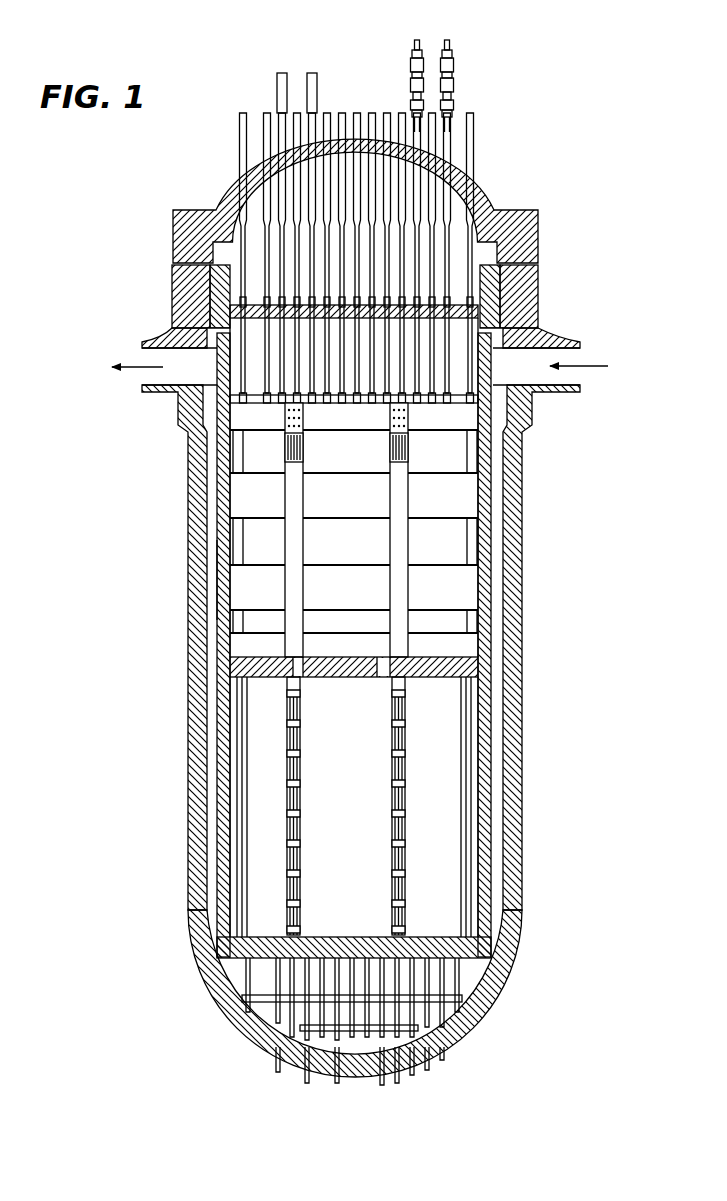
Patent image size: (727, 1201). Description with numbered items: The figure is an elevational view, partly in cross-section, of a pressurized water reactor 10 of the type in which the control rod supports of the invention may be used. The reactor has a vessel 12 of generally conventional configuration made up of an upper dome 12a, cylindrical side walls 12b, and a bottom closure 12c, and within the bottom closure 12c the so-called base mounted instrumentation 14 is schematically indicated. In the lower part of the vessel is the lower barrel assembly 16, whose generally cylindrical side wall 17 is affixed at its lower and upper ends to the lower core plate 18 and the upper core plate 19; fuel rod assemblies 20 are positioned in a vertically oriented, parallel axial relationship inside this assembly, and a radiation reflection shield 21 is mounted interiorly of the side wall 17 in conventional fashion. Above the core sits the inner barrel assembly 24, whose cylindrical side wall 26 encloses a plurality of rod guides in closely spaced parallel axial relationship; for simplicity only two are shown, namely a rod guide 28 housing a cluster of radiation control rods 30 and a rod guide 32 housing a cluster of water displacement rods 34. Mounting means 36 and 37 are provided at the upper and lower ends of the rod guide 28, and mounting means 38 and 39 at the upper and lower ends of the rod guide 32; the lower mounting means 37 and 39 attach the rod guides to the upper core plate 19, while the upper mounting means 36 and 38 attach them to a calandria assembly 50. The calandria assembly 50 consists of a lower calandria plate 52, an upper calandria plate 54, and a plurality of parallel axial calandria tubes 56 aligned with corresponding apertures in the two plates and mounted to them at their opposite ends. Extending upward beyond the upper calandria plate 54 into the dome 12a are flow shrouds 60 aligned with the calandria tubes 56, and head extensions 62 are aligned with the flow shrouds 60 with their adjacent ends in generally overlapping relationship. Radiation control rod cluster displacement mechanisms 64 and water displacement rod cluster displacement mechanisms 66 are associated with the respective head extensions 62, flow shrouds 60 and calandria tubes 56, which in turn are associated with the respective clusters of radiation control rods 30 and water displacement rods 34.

The pressurized water reactor 10 is at (599, 209).
The vessel 12 is at (362, 608).
The upper dome 12a is at (488, 197).
The cylindrical side walls 12b is at (522, 466).
The bottom closure 12c is at (490, 1002).
The base mounted instrumentation 14 is at (437, 1060).
The lower barrel assembly 16 is at (203, 731).
The cylindrical side wall 17 is at (218, 768).
The lower core plate 18 is at (218, 950).
The upper core plate 19 is at (243, 667).
The fuel rod assemblies 20 is at (386, 834).
The radiation reflection shield 21 is at (232, 815).
The inner barrel assembly 24 is at (208, 621).
The cylindrical side wall 26 is at (218, 577).
The rod guide 28 is at (304, 503).
The radiation control rods 30 is at (303, 448).
The rod guide 32 is at (408, 503).
The water displacement rods 34 is at (410, 437).
The mounting means 36 is at (304, 405).
The mounting means 37 is at (285, 657).
The mounting means 38 is at (399, 405).
The mounting means 39 is at (415, 663).
The calandria assembly 50 is at (210, 329).
The lower calandria plate 52 is at (255, 400).
The upper calandria plate 54 is at (253, 300).
The calandria tubes 56 is at (237, 357).
The flow shrouds 60 is at (448, 253).
The head extensions 62 is at (473, 147).
The radiation control rod cluster displacement mechanisms 64 is at (447, 40).
The water displacement rod cluster displacement mechanisms 66 is at (311, 87).